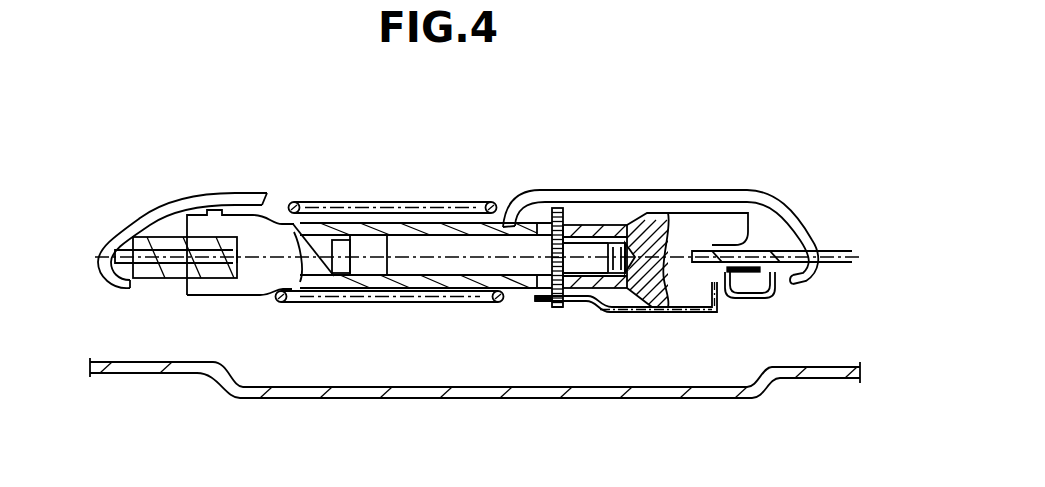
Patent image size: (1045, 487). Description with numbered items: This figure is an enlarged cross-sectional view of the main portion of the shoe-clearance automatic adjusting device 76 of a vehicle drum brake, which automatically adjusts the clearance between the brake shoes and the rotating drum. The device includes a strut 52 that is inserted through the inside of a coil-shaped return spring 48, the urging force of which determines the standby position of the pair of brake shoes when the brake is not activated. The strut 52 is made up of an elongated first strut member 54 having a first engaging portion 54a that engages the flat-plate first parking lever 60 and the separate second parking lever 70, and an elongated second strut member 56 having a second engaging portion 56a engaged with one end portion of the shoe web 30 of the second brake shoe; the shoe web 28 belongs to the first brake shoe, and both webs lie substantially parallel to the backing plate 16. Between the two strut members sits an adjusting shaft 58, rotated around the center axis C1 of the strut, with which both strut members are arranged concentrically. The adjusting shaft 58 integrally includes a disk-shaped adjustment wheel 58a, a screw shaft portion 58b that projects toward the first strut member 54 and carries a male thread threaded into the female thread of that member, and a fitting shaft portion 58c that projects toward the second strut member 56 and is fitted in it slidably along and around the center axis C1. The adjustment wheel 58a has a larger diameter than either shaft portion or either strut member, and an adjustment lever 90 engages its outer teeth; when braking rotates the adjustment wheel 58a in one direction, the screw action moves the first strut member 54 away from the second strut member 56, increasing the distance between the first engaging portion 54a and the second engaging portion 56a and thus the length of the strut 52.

The backing plate 16 is at (395, 393).
The shoe web 28 is at (190, 257).
The shoe web 30 is at (783, 262).
The return spring 48 is at (802, 280).
The strut 52 is at (503, 197).
The first strut member 54 is at (272, 233).
The first engaging portion 54a is at (228, 263).
The second strut member 56 is at (683, 228).
The second engaging portion 56a is at (717, 243).
The adjusting shaft 58 is at (543, 303).
The adjustment wheel 58a is at (563, 300).
The screw shaft portion 58b is at (423, 265).
The fitting shaft portion 58c is at (593, 247).
The first parking lever 60 is at (143, 273).
The second parking lever 70 is at (155, 242).
The shoe-clearance automatic adjusting device 76 is at (738, 162).
The adjustment lever 90 is at (627, 308).
The center axis C1 is at (860, 257).